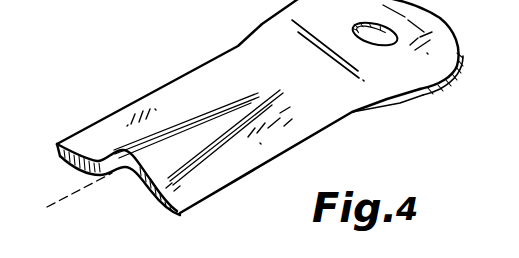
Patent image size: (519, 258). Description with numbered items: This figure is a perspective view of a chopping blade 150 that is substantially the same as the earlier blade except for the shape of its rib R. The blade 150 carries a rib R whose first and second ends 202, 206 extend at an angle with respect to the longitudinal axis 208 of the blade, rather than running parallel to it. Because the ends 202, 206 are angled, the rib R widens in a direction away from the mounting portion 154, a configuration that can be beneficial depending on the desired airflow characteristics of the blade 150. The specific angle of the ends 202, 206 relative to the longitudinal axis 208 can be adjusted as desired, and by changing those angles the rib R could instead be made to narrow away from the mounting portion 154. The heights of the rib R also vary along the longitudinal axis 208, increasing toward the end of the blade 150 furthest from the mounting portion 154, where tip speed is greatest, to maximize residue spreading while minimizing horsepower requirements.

The chopping blade 150 is at (403, 106).
The mounting portion 154 is at (418, 60).
The first end of the rib 202 is at (205, 162).
The rib R is at (207, 103).
The second end of the rib 206 is at (80, 153).
The longitudinal axis 208 is at (73, 193).